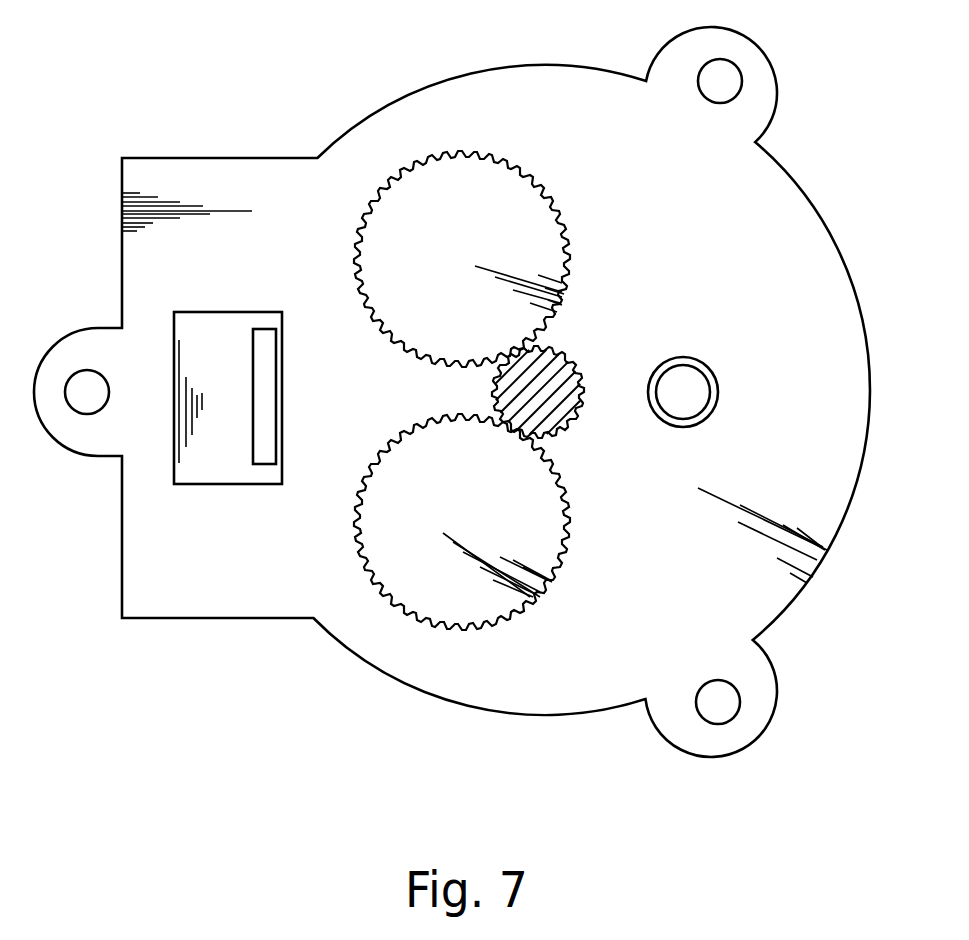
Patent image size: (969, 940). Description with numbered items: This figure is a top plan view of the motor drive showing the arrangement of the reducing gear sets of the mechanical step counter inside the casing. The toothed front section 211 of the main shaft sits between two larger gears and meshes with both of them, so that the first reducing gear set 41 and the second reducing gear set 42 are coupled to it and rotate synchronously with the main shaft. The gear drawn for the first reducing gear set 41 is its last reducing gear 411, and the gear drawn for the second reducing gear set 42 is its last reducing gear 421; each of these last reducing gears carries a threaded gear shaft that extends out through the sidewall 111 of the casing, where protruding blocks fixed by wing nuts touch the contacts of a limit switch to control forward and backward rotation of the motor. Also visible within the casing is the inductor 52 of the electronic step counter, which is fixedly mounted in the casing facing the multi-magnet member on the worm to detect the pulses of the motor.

The sidewall 111 is at (453, 685).
The first reducing gear set 41 is at (350, 232).
The last reducing gear 411 is at (547, 200).
The second reducing gear set 42 is at (348, 543).
The last reducing gear 421 is at (557, 542).
The toothed front section 211 is at (580, 363).
The inductor 52 is at (272, 410).